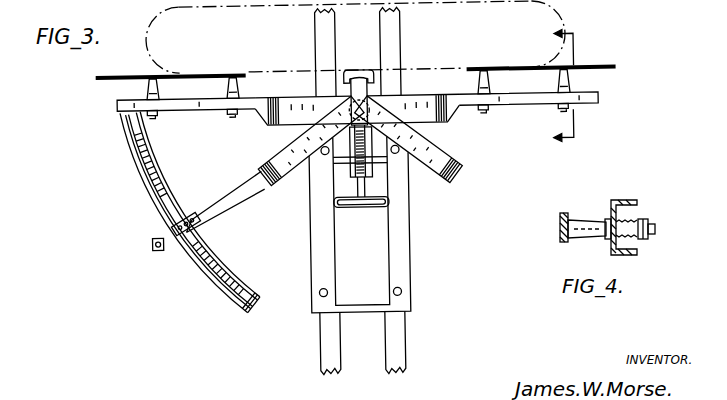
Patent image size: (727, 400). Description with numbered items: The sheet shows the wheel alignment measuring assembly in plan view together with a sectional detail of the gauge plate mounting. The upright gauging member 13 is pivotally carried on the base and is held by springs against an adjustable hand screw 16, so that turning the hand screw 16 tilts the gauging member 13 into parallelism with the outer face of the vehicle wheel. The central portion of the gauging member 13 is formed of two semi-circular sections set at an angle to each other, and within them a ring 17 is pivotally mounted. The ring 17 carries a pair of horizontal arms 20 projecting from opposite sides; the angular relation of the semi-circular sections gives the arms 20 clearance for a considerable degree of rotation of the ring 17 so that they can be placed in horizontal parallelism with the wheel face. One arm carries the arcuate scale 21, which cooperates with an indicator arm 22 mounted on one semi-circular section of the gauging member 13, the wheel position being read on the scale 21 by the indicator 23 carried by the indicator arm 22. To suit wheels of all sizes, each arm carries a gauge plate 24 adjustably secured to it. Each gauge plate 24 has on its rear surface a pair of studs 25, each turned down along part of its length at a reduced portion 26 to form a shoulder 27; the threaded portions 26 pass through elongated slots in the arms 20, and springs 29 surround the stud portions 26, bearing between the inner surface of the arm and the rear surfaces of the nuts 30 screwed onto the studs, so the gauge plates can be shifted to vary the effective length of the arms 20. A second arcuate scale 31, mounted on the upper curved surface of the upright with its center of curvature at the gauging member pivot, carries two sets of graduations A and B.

In FIG. 3, the upright gauging member 13 is at (360, 70).
In FIG. 3, the adjustable hand screw 16 is at (378, 206).
In FIG. 3, the ring 17 is at (313, 101).
In FIG. 3, the horizontal arms 20 is at (222, 108).
In FIG. 3, the arcuate scale 21 is at (137, 190).
In FIG. 3, the indicator arm 22 is at (243, 186).
In FIG. 3, the indicator 23 is at (190, 226).
In FIG. 3, the gauge plate 24 is at (133, 75).
In FIG. 4, the gauge plate 24 is at (565, 213).
In FIG. 3, the studs 25 is at (160, 87).
In FIG. 4, the studs 25 is at (598, 220).
In FIG. 4, the turned-down portion of stud 26 is at (628, 221).
In FIG. 4, the shoulder 27 is at (611, 233).
In FIG. 4, the springs 29 is at (640, 237).
In FIG. 4, the nuts 30 is at (652, 228).
In FIG. 3, the second arcuate scale 31 is at (354, 168).
In FIG. 3, the set of graduations A is at (348, 160).
In FIG. 3, the set of graduations B is at (378, 160).